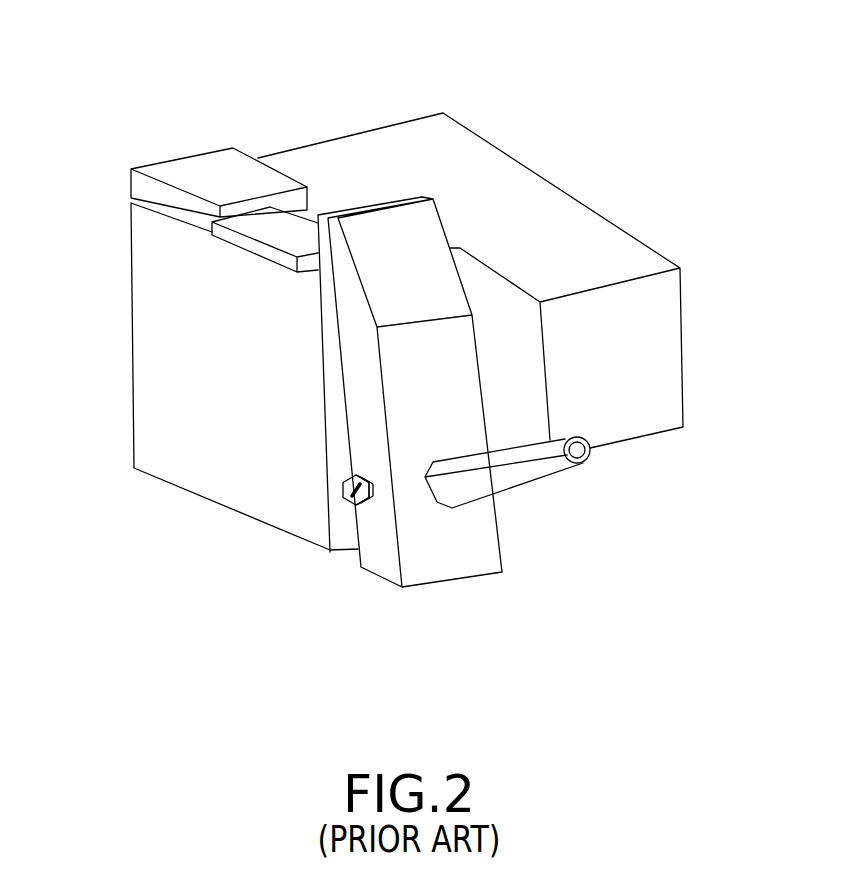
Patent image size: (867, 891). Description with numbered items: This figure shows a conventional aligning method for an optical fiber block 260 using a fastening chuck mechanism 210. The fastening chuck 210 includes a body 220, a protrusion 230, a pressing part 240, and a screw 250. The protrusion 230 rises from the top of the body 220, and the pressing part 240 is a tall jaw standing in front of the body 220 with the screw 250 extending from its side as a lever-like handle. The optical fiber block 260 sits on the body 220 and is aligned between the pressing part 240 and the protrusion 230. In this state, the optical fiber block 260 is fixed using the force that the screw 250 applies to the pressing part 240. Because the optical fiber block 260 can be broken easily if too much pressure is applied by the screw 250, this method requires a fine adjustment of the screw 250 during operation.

The fastening chuck mechanism 210 is at (392, 365).
The body 220 is at (474, 192).
The protrusion 230 is at (220, 178).
The pressing part 240 is at (455, 557).
The screw 250 is at (583, 465).
The optical fiber block 260 is at (293, 233).